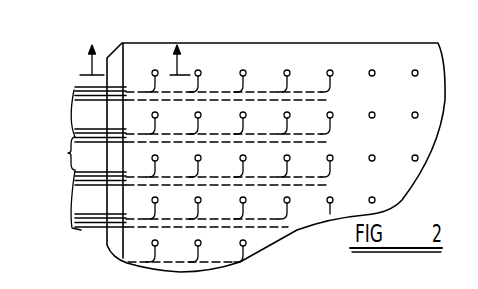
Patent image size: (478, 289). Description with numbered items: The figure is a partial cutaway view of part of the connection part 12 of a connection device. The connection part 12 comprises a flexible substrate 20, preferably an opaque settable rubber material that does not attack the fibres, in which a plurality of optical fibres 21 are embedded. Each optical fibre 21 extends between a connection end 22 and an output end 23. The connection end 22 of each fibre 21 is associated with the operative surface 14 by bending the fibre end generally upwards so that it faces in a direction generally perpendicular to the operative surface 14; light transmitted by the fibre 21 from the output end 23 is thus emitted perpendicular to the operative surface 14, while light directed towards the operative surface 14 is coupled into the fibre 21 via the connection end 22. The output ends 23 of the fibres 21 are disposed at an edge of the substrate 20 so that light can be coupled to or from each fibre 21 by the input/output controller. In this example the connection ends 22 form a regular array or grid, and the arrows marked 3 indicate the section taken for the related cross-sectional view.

The connection part 12 is at (420, 43).
The operative surface 14 is at (357, 77).
The flexible substrate 20 is at (160, 55).
The optical fibres 21 is at (135, 82).
The connection end 22 is at (203, 87).
The output end 23 is at (87, 158).
The section line III-III 3 is at (134, 59).